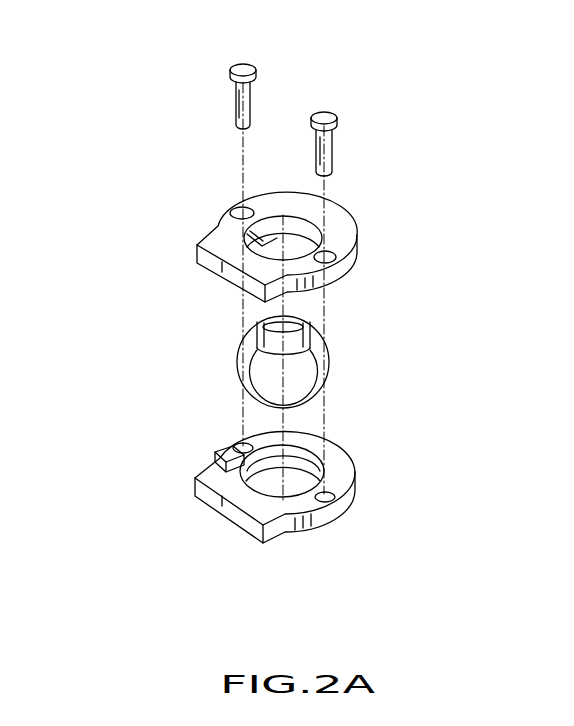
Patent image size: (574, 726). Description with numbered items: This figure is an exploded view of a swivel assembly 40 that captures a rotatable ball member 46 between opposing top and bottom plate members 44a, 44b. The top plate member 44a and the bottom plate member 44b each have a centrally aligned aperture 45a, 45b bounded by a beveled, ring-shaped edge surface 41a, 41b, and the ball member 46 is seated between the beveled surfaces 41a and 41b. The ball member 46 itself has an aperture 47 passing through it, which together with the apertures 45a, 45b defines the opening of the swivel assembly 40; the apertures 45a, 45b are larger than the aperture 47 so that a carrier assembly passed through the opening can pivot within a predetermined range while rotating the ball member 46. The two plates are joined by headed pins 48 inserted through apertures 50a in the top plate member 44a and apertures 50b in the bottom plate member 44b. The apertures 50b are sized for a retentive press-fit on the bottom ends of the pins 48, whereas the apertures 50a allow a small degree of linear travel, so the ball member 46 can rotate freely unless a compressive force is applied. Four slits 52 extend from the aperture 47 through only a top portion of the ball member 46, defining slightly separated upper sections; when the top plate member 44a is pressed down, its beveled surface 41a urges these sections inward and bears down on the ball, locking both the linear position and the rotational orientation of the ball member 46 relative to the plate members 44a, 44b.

The swivel assembly 40 is at (112, 251).
The headed pins 48 is at (285, 77).
The top plate member 44a is at (310, 240).
The aperture of top plate member 45a is at (272, 247).
The beveled edge surface of top plate member 41a is at (247, 238).
The apertures of top plate member 50a is at (322, 254).
The rotatable ball member 46 is at (291, 345).
The aperture of ball member 47 is at (290, 331).
The slits 52 is at (237, 363).
The bottom plate member 44b is at (305, 469).
The aperture of bottom plate member 45b is at (222, 475).
The beveled edge surface of bottom plate member 41b is at (221, 456).
The apertures of bottom plate member 50b is at (240, 446).